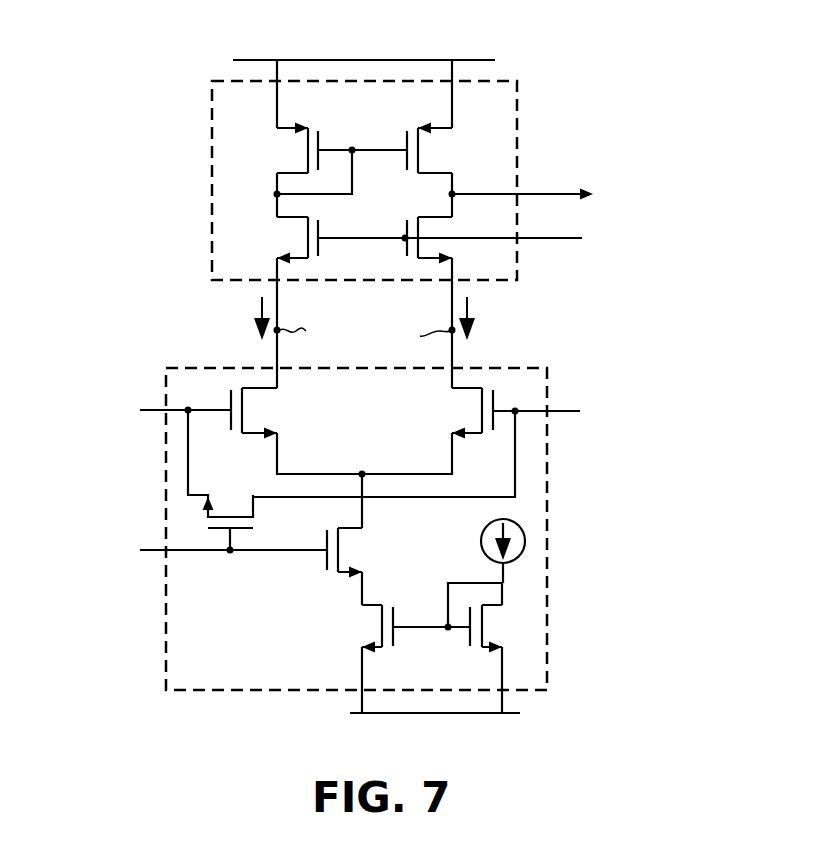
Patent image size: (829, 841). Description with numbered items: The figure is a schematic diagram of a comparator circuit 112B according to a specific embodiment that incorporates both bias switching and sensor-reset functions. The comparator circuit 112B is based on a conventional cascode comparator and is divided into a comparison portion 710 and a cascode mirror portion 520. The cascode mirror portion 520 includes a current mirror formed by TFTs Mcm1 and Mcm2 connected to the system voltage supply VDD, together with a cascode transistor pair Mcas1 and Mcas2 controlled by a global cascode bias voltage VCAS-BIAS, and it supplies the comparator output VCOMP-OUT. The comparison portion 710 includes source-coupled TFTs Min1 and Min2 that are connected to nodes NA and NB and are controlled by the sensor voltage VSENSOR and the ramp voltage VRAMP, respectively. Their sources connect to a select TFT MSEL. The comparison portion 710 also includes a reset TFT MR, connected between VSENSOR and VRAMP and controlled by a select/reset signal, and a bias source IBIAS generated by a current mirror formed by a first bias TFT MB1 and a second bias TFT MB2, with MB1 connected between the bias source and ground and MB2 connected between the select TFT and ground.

The comparator circuit 112B is at (612, 106).
The cascode mirror portion 520 is at (393, 119).
The comparison portion 710 is at (238, 683).